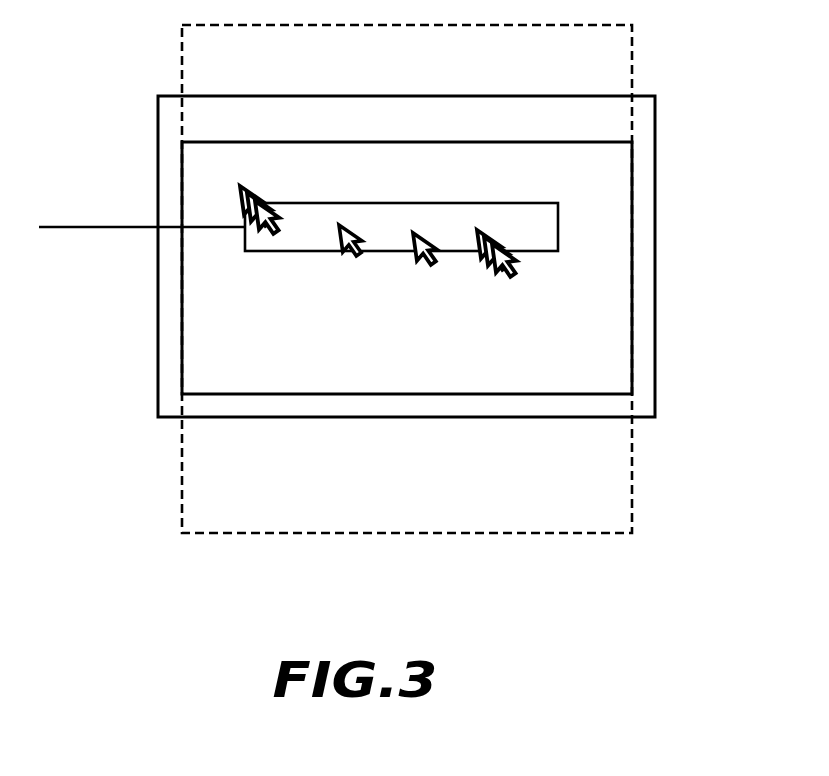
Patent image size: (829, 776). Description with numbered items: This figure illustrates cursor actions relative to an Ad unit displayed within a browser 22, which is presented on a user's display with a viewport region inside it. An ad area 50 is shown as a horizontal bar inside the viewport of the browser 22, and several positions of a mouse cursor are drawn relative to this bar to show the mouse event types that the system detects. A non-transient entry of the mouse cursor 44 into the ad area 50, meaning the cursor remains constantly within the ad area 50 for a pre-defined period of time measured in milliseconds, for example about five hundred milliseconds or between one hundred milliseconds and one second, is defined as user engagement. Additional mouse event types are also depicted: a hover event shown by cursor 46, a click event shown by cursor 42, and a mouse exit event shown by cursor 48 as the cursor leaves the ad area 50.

The browser 22 is at (655, 117).
The cursor 42 is at (418, 259).
The mouse cursor 44 is at (263, 209).
The cursor 46 is at (344, 251).
The cursor 48 is at (511, 266).
The ad area 50 is at (121, 226).